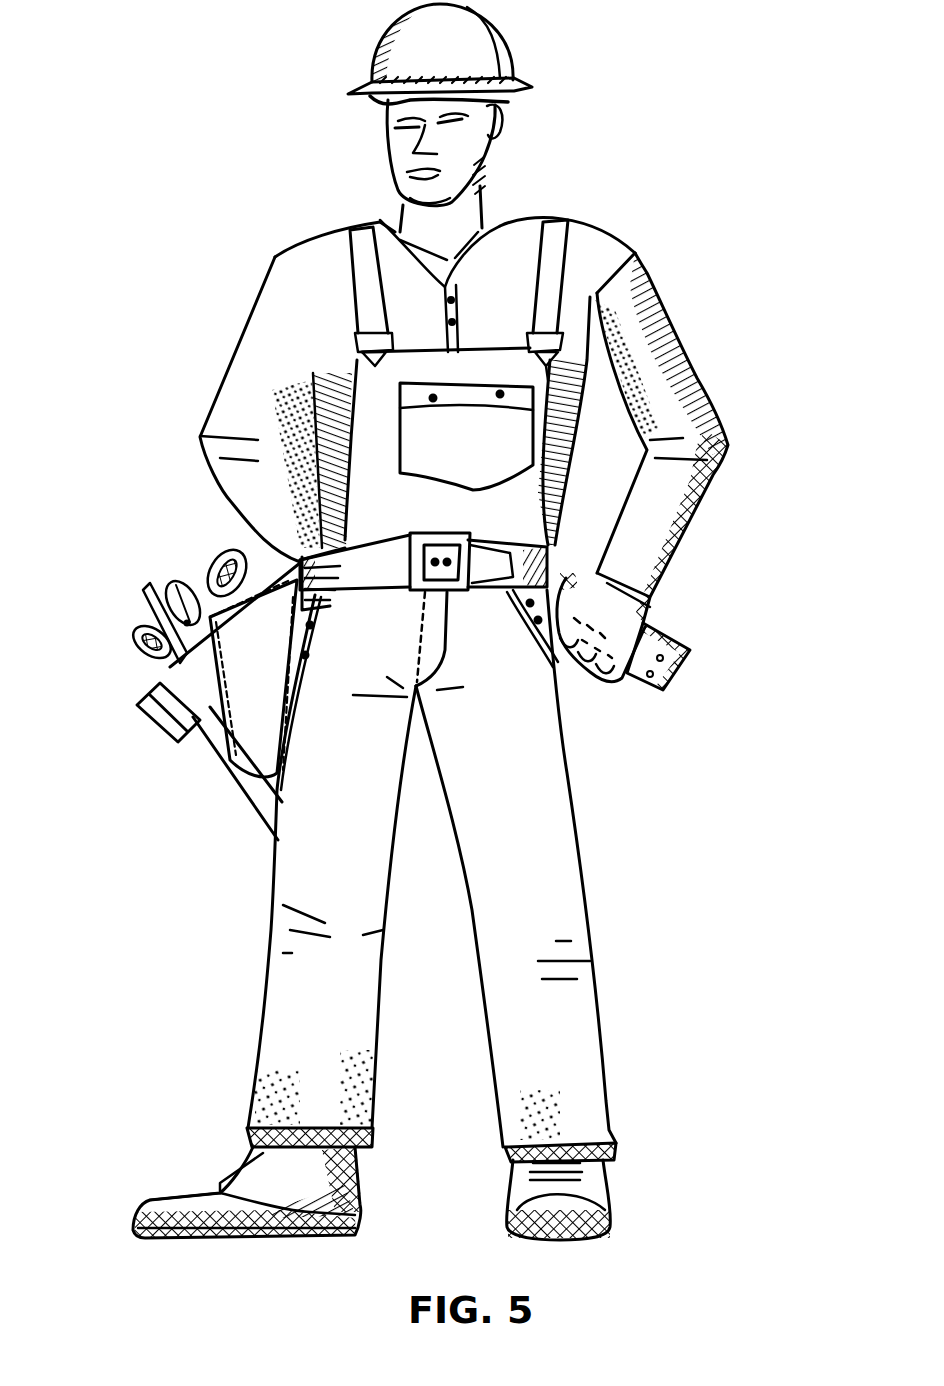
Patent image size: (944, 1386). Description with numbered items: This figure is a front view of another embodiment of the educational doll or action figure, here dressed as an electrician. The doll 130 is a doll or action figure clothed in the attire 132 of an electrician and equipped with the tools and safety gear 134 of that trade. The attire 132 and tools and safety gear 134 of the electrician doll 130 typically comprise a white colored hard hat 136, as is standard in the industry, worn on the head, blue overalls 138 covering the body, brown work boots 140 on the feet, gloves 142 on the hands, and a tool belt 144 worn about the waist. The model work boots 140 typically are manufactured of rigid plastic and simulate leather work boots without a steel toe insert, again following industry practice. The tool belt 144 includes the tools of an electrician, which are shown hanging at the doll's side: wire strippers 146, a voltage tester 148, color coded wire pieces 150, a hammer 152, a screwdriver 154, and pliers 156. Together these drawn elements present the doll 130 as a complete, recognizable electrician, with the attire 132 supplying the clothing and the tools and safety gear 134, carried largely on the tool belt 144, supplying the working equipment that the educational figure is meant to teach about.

The doll 130 is at (689, 84).
The attire 132 is at (697, 113).
The tools and safety gear 134 is at (699, 146).
The hard hat 136 is at (517, 58).
The overalls 138 is at (547, 232).
The work boots 140 is at (603, 1190).
The gloves 142 is at (643, 617).
The tool belt 144 is at (560, 573).
The wire strippers 146 is at (180, 580).
The voltage tester 148 is at (687, 648).
The color coded wire pieces 150 is at (140, 590).
The hammer 152 is at (157, 697).
The screwdriver 154 is at (137, 637).
The pliers 156 is at (223, 553).